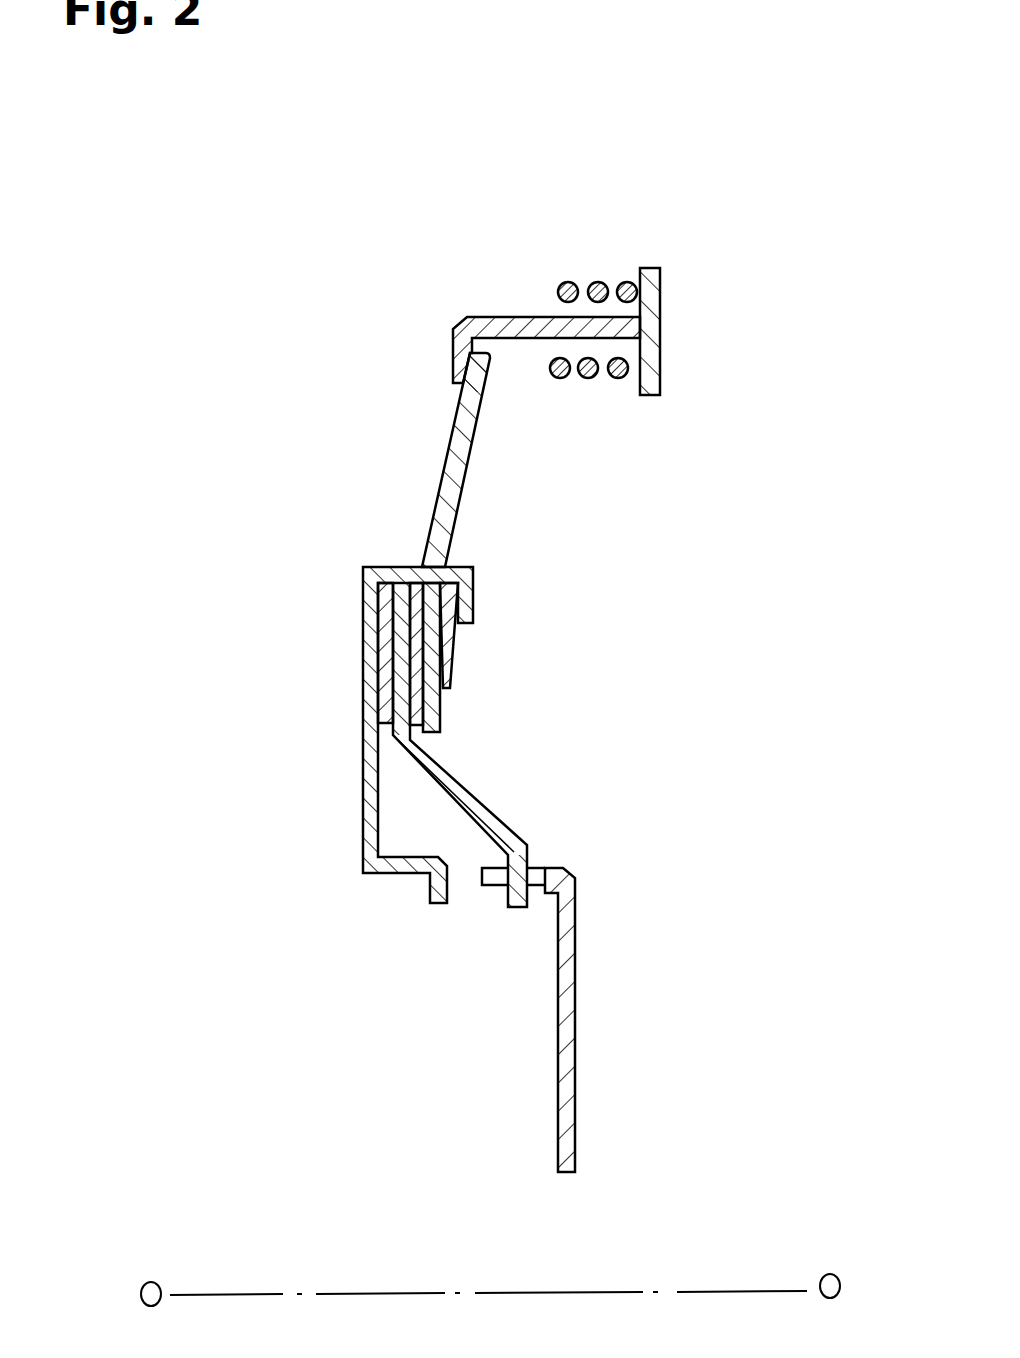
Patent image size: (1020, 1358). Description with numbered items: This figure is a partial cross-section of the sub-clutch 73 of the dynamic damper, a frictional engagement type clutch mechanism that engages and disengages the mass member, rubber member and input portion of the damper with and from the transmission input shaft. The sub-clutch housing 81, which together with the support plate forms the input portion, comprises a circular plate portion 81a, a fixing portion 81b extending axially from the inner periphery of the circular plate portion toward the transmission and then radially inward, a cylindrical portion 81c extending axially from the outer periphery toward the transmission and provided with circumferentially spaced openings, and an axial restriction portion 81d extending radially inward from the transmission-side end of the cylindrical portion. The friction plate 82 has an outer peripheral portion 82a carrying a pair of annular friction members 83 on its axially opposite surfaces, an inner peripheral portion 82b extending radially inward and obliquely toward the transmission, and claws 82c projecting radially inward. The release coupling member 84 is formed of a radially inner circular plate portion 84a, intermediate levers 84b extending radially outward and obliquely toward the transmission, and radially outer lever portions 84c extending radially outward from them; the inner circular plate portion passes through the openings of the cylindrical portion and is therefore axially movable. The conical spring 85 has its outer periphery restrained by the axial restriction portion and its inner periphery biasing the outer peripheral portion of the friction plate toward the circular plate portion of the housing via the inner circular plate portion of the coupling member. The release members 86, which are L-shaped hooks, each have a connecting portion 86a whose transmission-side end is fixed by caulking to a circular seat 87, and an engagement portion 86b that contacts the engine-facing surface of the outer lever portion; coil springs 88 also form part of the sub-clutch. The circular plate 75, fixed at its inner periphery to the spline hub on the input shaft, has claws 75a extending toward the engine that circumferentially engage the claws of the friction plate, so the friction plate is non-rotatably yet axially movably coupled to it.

The sub-clutch 73 is at (662, 204).
The circular plate 75 is at (578, 1013).
The claws 75a is at (495, 887).
The sub-clutch housing 81 is at (361, 750).
The circular plate portion 81a is at (370, 802).
The fixing portion 81b is at (407, 865).
The cylindrical portion 81c is at (403, 575).
The axial restriction portion 81d is at (468, 594).
The friction plate 82 is at (523, 827).
The outer peripheral portion 82a is at (383, 605).
The inner peripheral portion 82b is at (483, 810).
The claws 82c is at (522, 907).
The annular friction members 83 is at (383, 683).
The release coupling member 84 is at (473, 459).
The radially inner circular plate portion 84a is at (433, 712).
The intermediate levers 84b is at (455, 478).
The radially outer lever portions 84c is at (483, 367).
The conical spring 85 is at (458, 645).
The release members 86 is at (491, 314).
The connecting portion 86a is at (545, 330).
The engagement portion 86b is at (463, 363).
The circular seats 87 is at (655, 366).
The coil springs 88 is at (570, 282).